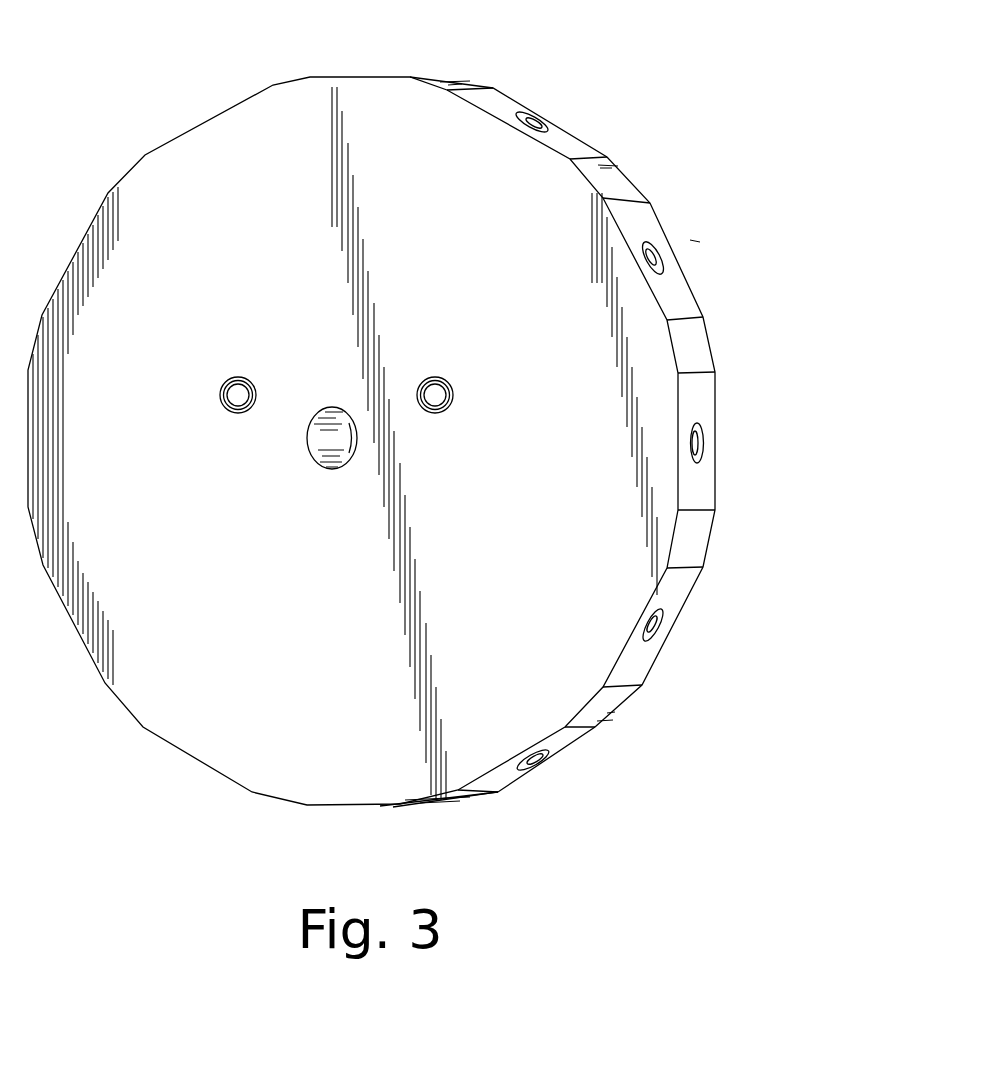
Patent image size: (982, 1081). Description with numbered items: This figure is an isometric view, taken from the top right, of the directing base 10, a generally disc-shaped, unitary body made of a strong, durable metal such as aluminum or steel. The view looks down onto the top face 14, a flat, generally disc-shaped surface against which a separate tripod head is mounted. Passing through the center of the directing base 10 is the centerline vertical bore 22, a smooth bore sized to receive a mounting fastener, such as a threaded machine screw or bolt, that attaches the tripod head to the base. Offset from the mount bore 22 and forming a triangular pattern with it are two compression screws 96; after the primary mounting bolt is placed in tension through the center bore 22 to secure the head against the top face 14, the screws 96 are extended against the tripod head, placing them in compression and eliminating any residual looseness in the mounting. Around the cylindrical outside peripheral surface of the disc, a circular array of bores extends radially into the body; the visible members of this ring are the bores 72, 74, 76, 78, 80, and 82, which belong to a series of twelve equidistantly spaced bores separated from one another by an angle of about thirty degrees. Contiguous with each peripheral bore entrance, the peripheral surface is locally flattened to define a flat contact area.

The directing base 10 is at (121, 91).
The top face 14 is at (252, 128).
The centerline vertical bore 22 is at (307, 443).
The bore 72 is at (393, 806).
The bore 74 is at (545, 762).
The bore 76 is at (653, 628).
The bore 78 is at (702, 445).
The bore 80 is at (650, 252).
The bore 82 is at (545, 125).
The compression screws 96 is at (238, 395).